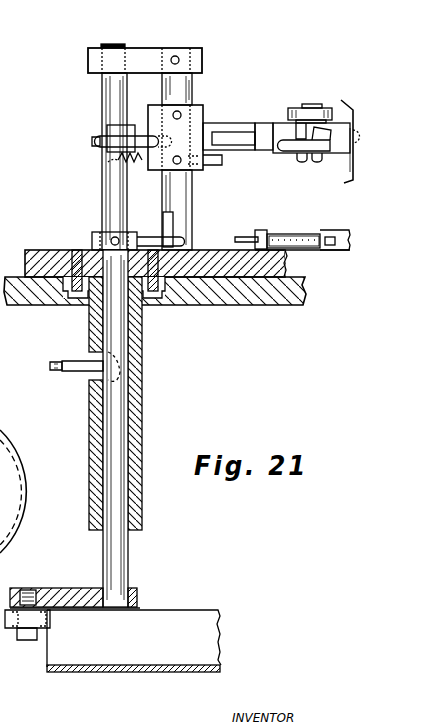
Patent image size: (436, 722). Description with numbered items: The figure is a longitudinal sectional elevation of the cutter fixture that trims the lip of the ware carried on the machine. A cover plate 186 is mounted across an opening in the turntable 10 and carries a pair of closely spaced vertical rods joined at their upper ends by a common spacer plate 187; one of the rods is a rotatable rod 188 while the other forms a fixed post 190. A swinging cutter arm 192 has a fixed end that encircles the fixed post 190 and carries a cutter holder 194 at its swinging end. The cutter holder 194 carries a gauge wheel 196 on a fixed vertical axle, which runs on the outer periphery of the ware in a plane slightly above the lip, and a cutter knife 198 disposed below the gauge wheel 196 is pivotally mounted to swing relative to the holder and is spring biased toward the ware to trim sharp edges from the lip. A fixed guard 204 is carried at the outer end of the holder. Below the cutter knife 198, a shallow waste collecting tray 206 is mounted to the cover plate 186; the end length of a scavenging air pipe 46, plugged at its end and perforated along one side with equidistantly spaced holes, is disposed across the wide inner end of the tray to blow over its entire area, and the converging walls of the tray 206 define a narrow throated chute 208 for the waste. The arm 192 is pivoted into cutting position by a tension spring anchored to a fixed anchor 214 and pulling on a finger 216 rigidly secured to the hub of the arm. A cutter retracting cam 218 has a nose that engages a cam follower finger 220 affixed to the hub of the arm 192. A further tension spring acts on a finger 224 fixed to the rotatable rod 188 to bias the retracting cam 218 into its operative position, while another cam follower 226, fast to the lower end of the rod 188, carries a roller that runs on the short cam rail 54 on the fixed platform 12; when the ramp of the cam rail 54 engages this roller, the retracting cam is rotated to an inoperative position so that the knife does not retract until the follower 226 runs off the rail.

The spacer plate 187 is at (145, 48).
The fixed post 190 is at (192, 86).
The swinging cutter arm 192 is at (234, 123).
The cutter holder 194 is at (263, 123).
The gauge wheel 196 is at (328, 91).
The cutter knife 198 is at (328, 155).
The fixed guard 204 is at (350, 183).
The fixed anchor 214 is at (222, 162).
The finger 216 is at (110, 163).
The cutter retracting cam 218 is at (98, 143).
The cam follower finger 220 is at (108, 133).
The rotatable rod 188 is at (102, 210).
The cover plate 186 is at (212, 250).
The air pipe 46 is at (244, 237).
The chute 208 is at (265, 240).
The waste collecting tray 206 is at (346, 250).
The turntable 10 is at (305, 291).
The finger 224 is at (77, 361).
The cam follower 226 is at (83, 588).
The cam rail 54 is at (216, 620).
The fixed platform 12 is at (210, 672).